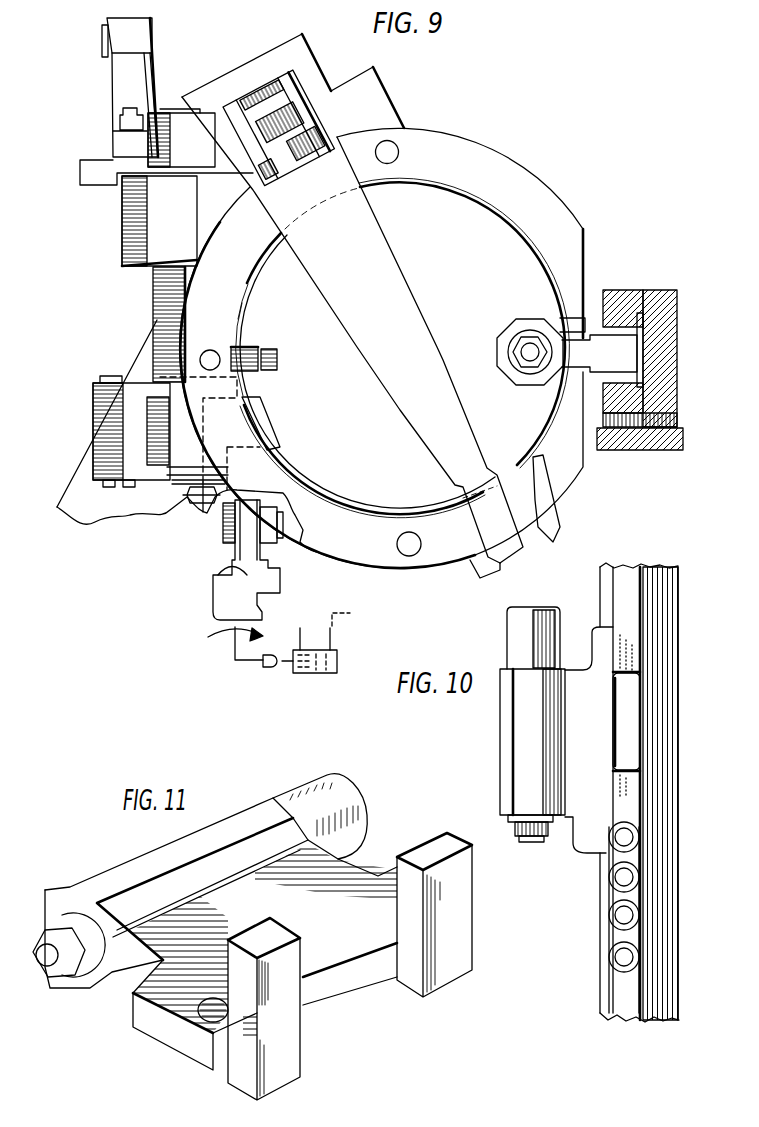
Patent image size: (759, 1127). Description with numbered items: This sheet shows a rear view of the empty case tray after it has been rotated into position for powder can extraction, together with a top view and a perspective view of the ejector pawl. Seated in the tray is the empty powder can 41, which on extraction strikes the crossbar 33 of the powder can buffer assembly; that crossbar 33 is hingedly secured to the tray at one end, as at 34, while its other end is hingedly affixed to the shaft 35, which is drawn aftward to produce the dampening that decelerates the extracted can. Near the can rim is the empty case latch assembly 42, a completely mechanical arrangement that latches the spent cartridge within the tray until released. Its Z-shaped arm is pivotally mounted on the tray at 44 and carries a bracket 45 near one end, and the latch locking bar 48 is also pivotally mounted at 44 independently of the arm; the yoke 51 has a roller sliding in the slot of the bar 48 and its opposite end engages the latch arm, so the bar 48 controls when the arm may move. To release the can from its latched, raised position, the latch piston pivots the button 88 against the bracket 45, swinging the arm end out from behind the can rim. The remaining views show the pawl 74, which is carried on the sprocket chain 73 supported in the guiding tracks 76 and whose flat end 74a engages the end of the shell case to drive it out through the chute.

In FIG. 9, the crossbar 33 is at (362, 280).
In FIG. 9, the empty powder can 41 is at (452, 288).
In FIG. 9, the shaft 35 is at (262, 95).
In FIG. 9, the pivot mounting 44 is at (172, 112).
In FIG. 9, the yoke 51 is at (95, 440).
In FIG. 9, the latch locking bar 48 is at (250, 350).
In FIG. 9, the bracket 45 is at (201, 522).
In FIG. 9, the button 88 is at (253, 552).
In FIG. 9, the empty case latch assembly 42 is at (312, 673).
In FIG. 9, the pawl 74 is at (500, 328).
In FIG. 10, the pawl 74 is at (500, 739).
In FIG. 11, the pawl 74 is at (140, 858).
In FIG. 10, the flat end 74a is at (505, 626).
In FIG. 11, the flat end 74a is at (350, 785).
In FIG. 9, the guiding tracks 76 is at (670, 390).
In FIG. 10, the guiding tracks 76 is at (657, 733).
In FIG. 9, the hinge connection 34 is at (545, 502).
In FIG. 10, the sprocket chain 73 is at (608, 899).